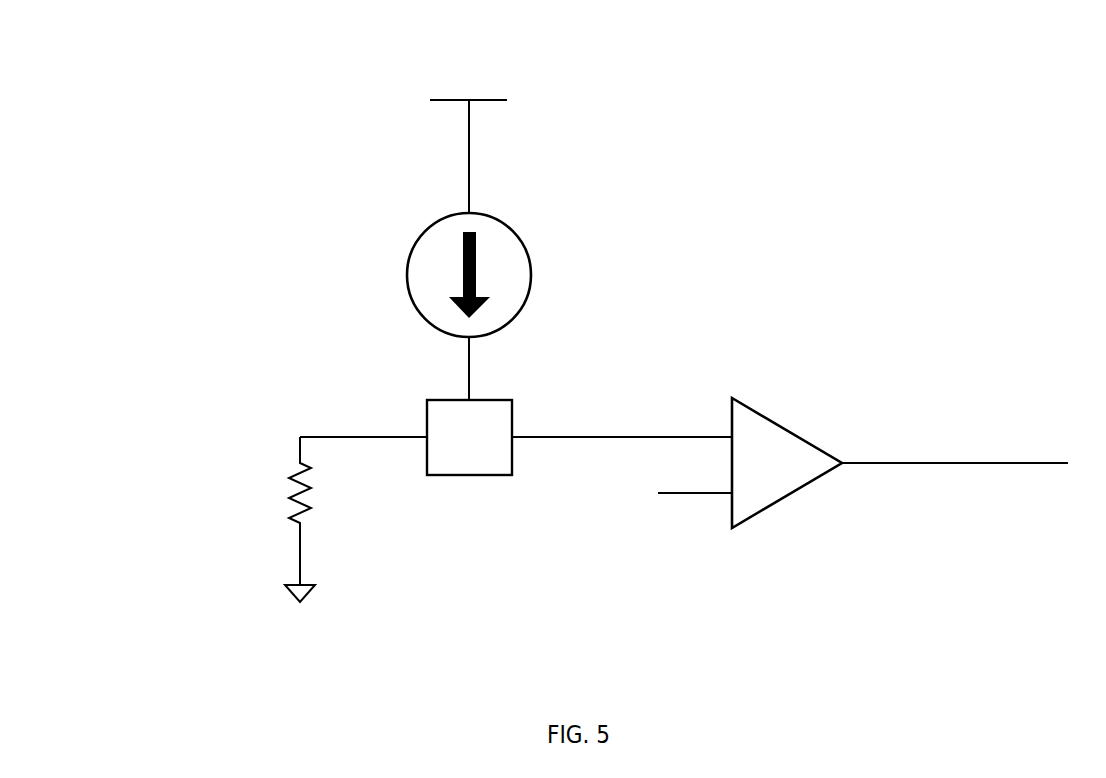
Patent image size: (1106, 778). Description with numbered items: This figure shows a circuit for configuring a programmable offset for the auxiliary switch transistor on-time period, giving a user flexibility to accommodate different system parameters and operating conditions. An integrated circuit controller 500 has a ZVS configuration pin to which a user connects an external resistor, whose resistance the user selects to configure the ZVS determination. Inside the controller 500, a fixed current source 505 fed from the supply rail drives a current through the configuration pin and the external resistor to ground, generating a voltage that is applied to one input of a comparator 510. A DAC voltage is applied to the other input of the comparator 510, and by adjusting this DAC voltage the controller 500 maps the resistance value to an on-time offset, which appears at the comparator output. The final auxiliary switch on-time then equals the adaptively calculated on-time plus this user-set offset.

The integrated circuit controller 500 is at (716, 108).
The fixed current source 505 is at (532, 255).
The comparator 510 is at (783, 424).